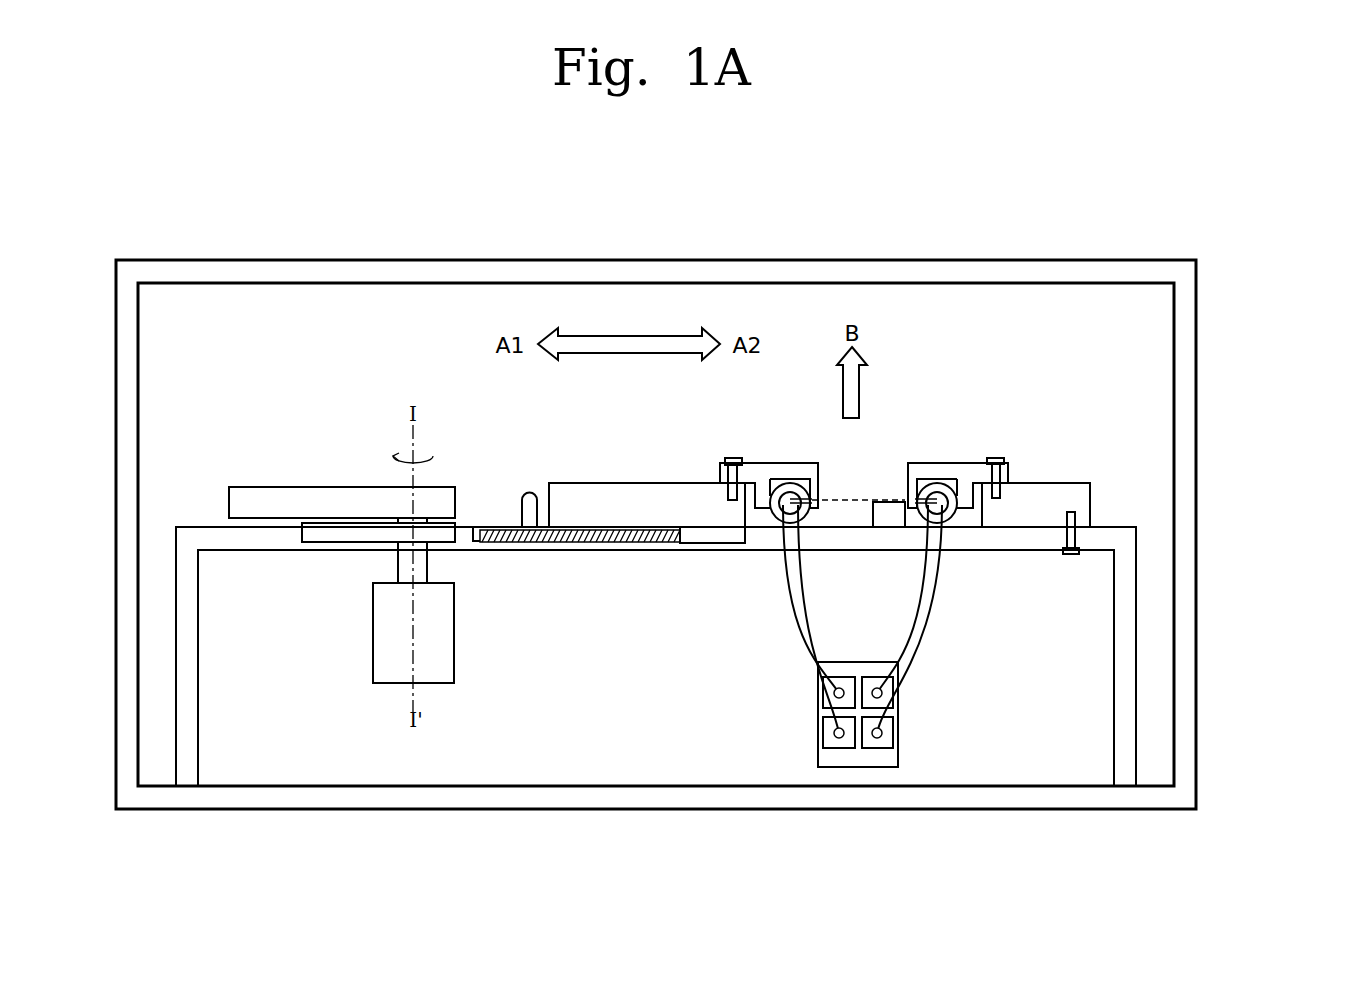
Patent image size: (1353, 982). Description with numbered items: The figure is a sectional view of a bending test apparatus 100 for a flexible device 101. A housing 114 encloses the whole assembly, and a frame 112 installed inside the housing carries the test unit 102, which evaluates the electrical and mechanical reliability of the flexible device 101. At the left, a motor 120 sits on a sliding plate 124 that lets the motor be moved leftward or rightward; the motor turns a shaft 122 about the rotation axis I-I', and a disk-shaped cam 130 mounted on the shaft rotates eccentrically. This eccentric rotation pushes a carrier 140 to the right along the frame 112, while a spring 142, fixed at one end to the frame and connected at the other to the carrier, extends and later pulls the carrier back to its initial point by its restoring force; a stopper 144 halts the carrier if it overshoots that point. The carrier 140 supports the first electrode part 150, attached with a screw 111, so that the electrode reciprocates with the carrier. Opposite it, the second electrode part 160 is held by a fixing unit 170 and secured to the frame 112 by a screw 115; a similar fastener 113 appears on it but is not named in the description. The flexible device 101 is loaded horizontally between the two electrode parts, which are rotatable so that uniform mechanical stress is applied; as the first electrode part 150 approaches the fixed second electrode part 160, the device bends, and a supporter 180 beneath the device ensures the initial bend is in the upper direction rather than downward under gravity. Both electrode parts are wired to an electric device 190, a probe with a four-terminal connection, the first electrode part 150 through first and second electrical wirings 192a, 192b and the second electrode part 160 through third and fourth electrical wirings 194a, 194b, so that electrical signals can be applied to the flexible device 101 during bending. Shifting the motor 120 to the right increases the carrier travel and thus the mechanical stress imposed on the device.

The bending test apparatus 100 is at (1152, 217).
The flexible device 101 is at (853, 492).
The test unit 102 is at (1130, 362).
The screw 111 is at (735, 458).
The frame 112 is at (237, 543).
The fixing pin 113 is at (996, 468).
The housing 114 is at (1182, 455).
The screw 115 is at (1071, 556).
The motor 120 is at (436, 637).
The shaft 122 is at (420, 568).
The sliding plate 124 is at (320, 537).
The cam 130 is at (316, 497).
The carrier 140 is at (620, 500).
The spring 142 is at (600, 543).
The stopper 144 is at (527, 490).
The first electrode part 150 is at (790, 470).
The second electrode part 160 is at (928, 470).
The fixing unit 170 is at (1053, 497).
The supporter 180 is at (888, 530).
The electric device 190 is at (818, 720).
The first electrical wiring 192a is at (796, 604).
The second electrical wiring 192b is at (808, 640).
The third electrical wiring 194a is at (920, 604).
The fourth electrical wiring 194b is at (928, 642).